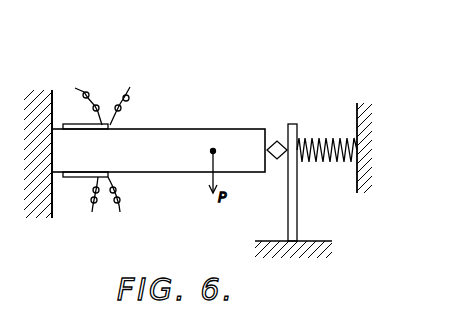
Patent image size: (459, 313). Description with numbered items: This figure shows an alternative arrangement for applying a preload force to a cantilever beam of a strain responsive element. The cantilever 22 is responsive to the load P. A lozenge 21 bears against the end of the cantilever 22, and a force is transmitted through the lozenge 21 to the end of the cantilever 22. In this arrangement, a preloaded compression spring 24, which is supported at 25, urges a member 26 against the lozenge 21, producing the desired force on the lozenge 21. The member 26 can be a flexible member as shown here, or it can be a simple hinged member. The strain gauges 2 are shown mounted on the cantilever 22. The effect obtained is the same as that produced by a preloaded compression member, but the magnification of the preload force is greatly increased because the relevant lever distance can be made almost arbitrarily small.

The strain gauge 2 is at (78, 124).
The lozenge 21 is at (275, 141).
The cantilever 22 is at (188, 129).
The preloaded compression spring 24 is at (313, 138).
The support 25 is at (355, 163).
The member 26 is at (298, 219).